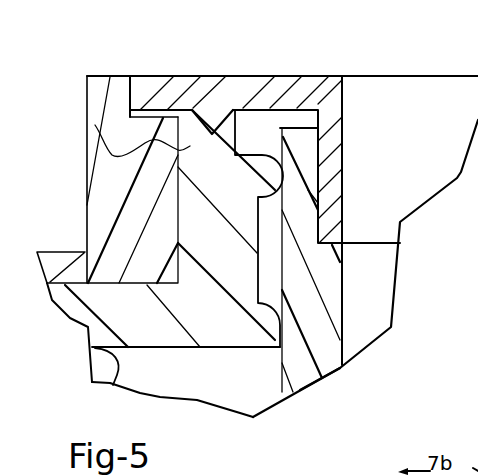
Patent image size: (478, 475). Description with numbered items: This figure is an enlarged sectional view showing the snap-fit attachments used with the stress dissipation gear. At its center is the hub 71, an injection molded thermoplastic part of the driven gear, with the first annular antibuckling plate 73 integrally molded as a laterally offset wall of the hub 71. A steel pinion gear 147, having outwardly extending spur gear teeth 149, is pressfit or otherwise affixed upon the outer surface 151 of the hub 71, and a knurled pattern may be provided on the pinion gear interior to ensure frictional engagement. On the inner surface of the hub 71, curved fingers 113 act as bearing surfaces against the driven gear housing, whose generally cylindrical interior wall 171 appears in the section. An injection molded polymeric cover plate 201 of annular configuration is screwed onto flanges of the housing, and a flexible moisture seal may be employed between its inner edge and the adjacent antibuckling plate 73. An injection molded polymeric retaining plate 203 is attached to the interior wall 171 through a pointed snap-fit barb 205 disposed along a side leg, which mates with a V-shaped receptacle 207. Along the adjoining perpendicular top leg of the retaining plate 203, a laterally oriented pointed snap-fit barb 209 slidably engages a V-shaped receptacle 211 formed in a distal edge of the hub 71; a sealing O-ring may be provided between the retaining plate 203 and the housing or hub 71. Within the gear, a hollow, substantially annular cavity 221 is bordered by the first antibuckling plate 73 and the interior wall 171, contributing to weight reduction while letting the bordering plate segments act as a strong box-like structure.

The hub 71 is at (237, 263).
The first annular antibuckling plate 73 is at (123, 318).
The curved fingers 113 is at (338, 360).
The pinion gear 147 is at (112, 178).
The spur gear teeth 149 is at (98, 94).
The outer surface 151 is at (95, 125).
The interior wall 171 is at (310, 372).
The cover plate 201 is at (63, 267).
The retaining plate 203 is at (292, 90).
The pointed snap-fit barb 205 is at (316, 187).
The V-shaped receptacle 207 is at (316, 183).
The pointed snap-fit barb 209 is at (212, 108).
The V-shaped receptacle 211 is at (173, 123).
The annular cavity 221 is at (217, 387).